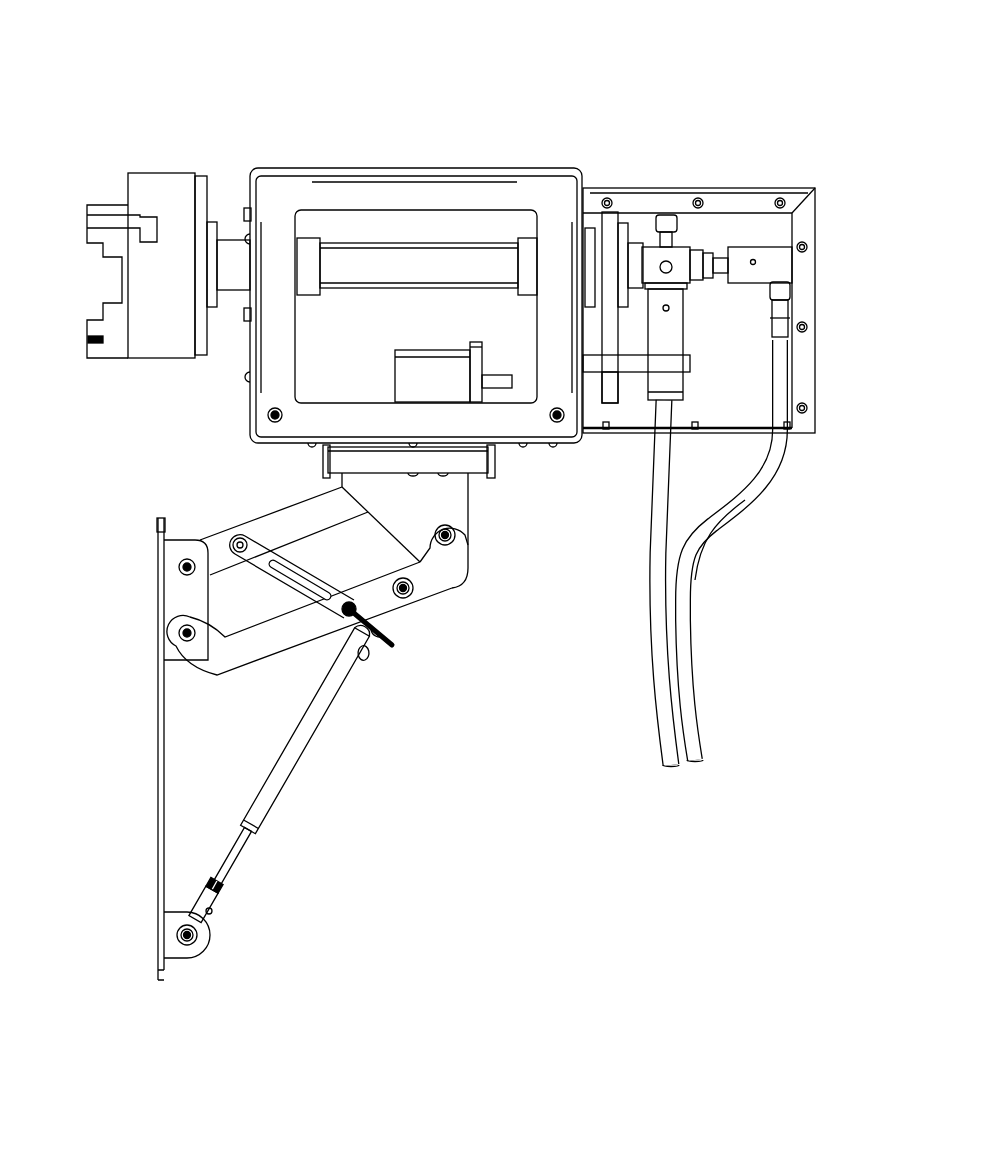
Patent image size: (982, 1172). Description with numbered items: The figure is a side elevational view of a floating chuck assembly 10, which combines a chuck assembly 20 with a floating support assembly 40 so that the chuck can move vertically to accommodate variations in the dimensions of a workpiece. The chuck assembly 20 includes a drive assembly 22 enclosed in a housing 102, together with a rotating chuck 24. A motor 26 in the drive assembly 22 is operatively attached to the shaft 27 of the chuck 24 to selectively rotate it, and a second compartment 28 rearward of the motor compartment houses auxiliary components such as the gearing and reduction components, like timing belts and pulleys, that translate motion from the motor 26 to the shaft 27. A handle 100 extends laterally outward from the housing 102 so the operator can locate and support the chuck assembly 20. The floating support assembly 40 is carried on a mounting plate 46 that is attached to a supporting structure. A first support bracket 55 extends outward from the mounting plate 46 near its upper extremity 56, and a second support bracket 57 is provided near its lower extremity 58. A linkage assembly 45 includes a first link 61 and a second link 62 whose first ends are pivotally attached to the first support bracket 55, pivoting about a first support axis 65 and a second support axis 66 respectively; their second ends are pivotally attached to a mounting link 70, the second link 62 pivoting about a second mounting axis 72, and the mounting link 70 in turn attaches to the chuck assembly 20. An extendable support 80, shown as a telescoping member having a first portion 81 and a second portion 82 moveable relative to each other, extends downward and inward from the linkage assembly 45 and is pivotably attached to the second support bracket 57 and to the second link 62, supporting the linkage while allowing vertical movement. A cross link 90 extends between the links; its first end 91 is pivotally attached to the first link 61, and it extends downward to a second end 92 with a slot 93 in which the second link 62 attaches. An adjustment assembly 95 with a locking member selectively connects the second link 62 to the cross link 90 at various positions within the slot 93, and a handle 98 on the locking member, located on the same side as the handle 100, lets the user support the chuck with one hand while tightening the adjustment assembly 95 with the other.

The floating chuck assembly 10 is at (262, 88).
The chuck assembly 20 is at (450, 162).
The drive assembly 22 is at (377, 222).
The rotating chuck 24 is at (150, 173).
The motor 26 is at (411, 372).
The shaft 27 is at (372, 270).
The second compartment 28 is at (690, 185).
The floating support assembly 40 is at (391, 679).
The linkage assembly 45 is at (208, 514).
The mounting plate 46 is at (157, 805).
The first support bracket 55 is at (183, 600).
The upper extremity 56 is at (160, 518).
The second support bracket 57 is at (177, 950).
The lower extremity 58 is at (160, 983).
The first link 61 is at (285, 520).
The second link 62 is at (277, 647).
The first support axis 65 is at (178, 567).
The second support axis 66 is at (178, 638).
The mounting link 70 is at (455, 497).
The second mounting axis 72 is at (458, 533).
The extendable support 80 is at (292, 770).
The first portion 81 is at (245, 860).
The second portion 82 is at (322, 717).
The cross link 90 is at (312, 563).
The first end 91 is at (240, 538).
The second end 92 is at (395, 622).
The slot 93 is at (292, 583).
The adjustment assembly 95 is at (412, 652).
The handle 98 is at (398, 655).
The handle 100 is at (478, 463).
The housing 102 is at (256, 430).